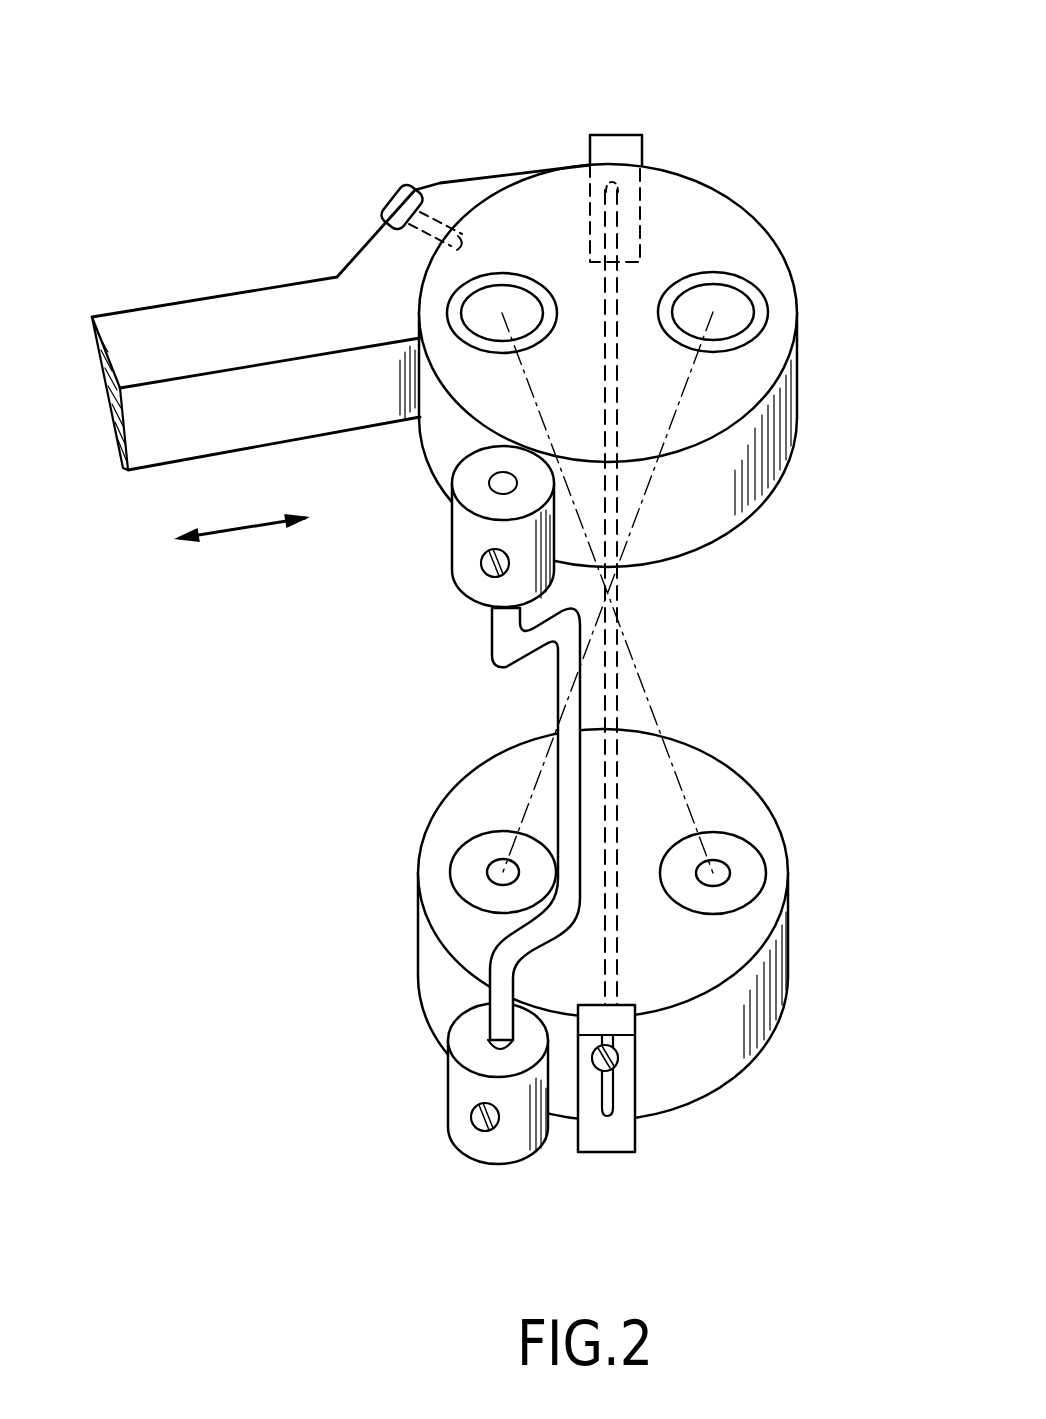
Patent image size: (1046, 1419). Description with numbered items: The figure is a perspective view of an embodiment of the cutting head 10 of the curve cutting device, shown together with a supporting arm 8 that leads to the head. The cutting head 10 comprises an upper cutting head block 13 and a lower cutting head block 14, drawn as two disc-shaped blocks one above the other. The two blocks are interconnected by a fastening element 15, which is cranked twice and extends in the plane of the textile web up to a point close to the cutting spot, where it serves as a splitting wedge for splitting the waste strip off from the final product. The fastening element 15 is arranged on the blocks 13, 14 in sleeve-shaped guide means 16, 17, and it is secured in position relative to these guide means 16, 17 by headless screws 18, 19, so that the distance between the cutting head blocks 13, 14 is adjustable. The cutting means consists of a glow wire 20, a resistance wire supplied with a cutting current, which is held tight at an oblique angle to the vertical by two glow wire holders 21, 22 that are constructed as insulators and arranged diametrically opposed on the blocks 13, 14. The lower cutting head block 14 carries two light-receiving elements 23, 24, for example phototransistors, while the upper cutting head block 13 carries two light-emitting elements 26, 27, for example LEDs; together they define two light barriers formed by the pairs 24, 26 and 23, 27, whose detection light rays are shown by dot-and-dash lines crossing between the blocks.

The arm 8 is at (222, 337).
The cutting head 10 is at (466, 138).
The upper cutting head block 13 is at (740, 480).
The lower cutting head block 14 is at (790, 968).
The fastening element 15 is at (492, 638).
The sleeve-shaped guide means 16 is at (480, 533).
The sleeve-shaped guide means 17 is at (463, 1090).
The headless screw 18 is at (480, 567).
The headless screw 19 is at (478, 1120).
The glow wire 20 is at (613, 708).
The glow wire holder 21 is at (617, 1118).
The glow wire holder 22 is at (627, 152).
The light-receiving element 23 is at (472, 868).
The light-receiving element 24 is at (748, 873).
The light-emitting element 26 is at (507, 295).
The light-emitting element 27 is at (738, 312).